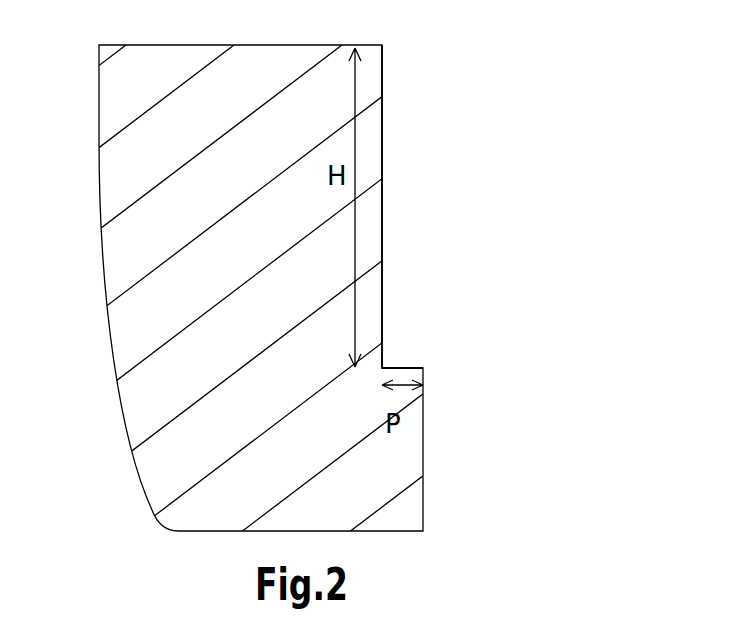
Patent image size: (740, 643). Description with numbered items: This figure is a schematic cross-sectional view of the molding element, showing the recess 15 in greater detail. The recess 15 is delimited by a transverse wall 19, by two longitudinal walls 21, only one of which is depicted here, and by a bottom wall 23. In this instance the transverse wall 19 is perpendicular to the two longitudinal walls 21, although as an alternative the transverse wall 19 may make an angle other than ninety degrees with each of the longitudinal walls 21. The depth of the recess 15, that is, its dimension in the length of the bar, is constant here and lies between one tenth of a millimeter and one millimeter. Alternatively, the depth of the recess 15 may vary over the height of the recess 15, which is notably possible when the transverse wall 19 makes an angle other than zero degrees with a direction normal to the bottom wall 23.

The recess 15 is at (531, 42).
The transverse wall 19 is at (395, 125).
The longitudinal wall 21 is at (417, 213).
The bottom wall 23 is at (415, 364).